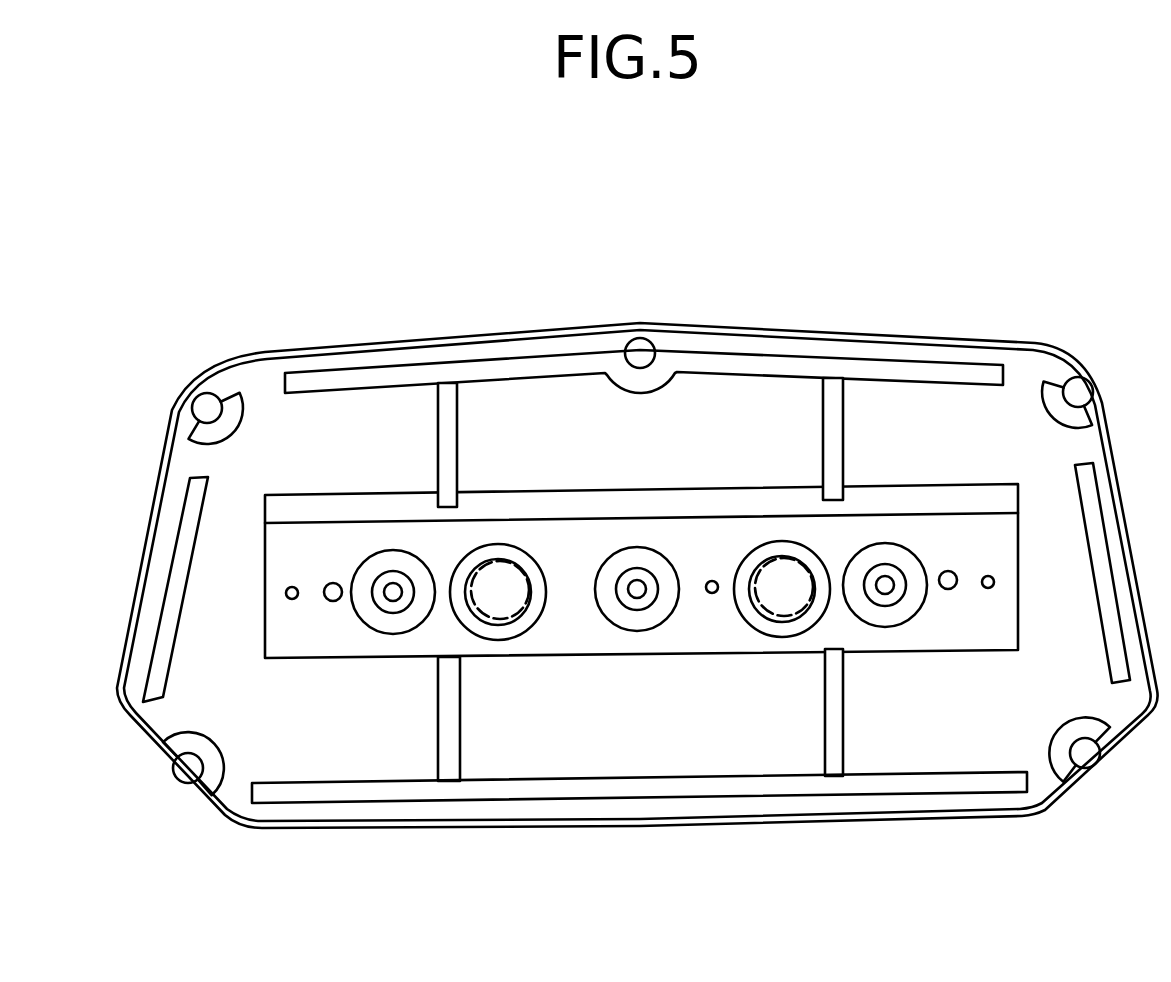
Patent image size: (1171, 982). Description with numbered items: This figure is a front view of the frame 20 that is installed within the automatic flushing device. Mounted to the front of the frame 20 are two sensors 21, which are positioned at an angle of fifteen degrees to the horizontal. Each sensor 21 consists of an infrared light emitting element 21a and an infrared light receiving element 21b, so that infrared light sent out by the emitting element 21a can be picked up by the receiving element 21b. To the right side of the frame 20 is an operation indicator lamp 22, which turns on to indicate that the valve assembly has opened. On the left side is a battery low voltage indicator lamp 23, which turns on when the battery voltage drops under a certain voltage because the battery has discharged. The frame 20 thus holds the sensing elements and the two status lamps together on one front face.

The frame 20 is at (280, 243).
The sensors 21 is at (762, 179).
The infrared light emitting element 21a is at (492, 573).
The infrared light receiving element 21b is at (782, 570).
The operation indicator lamp 22 is at (948, 571).
The battery low voltage indicator lamp 23 is at (333, 583).